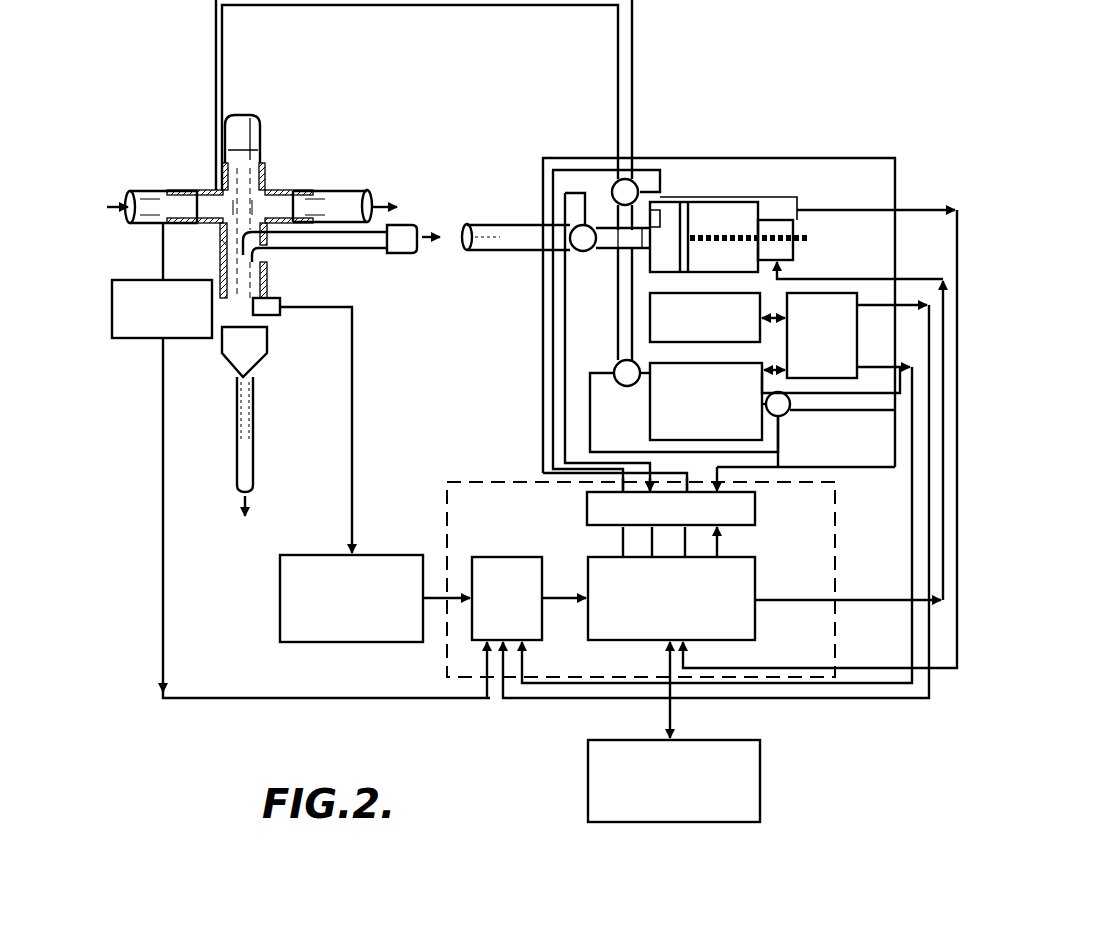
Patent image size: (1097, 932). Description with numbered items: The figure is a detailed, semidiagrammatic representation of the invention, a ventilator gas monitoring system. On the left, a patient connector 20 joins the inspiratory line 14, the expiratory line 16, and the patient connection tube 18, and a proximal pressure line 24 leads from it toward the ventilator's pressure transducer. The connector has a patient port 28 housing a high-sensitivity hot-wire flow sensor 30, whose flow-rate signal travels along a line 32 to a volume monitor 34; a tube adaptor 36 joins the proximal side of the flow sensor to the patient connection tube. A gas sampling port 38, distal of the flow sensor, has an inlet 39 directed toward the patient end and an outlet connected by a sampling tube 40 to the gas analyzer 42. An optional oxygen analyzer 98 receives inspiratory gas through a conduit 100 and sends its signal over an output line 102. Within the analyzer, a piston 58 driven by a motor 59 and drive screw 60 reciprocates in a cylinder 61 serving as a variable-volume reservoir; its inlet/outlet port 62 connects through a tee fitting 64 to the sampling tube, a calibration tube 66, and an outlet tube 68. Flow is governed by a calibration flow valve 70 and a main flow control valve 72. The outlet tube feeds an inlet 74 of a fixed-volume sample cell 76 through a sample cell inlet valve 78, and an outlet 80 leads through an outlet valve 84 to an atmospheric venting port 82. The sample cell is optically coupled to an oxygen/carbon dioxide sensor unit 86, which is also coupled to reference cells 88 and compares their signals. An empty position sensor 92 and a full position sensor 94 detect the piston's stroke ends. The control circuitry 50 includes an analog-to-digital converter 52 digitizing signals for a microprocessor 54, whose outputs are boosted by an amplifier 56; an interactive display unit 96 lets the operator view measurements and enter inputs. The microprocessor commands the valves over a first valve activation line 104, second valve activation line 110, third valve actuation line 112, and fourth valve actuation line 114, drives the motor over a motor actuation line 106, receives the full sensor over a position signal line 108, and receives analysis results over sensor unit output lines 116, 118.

The inspiratory line 14 is at (160, 191).
The expiratory line 16 is at (340, 191).
The patient connection tube 18 is at (254, 467).
The patient connector 20 is at (283, 165).
The proximal pressure line 24 is at (262, 130).
The patient port 28 is at (219, 245).
The flow sensor 30 is at (258, 290).
The line 32 is at (353, 458).
The volume monitor 34 is at (386, 555).
The tube adaptor 36 is at (268, 348).
The gas sampling port 38 is at (240, 209).
The sampling port inlet 39 is at (268, 255).
The sampling tube 40 is at (395, 253).
The gas analyzer 42 is at (733, 147).
The control circuitry 50 is at (472, 482).
The analog-to-digital converter 52 is at (518, 557).
The microprocessor 54 is at (757, 582).
The amplifier 56 is at (757, 512).
The piston 58 is at (723, 234).
The motor 59 is at (796, 260).
The drive screw 60 is at (792, 236).
The cylinder 61 is at (722, 272).
The inlet/outlet port 62 is at (665, 272).
The tee fitting 64 is at (622, 244).
The calibration tube 66 is at (632, 92).
The outlet tube 68 is at (618, 314).
The calibration flow valve 70 is at (612, 183).
The main flow control valve 72 is at (572, 250).
The inlet 74 is at (651, 428).
The sample cell 76 is at (713, 448).
The sample cell inlet valve 78 is at (601, 335).
The outlet 80 is at (720, 440).
The atmospheric venting port 82 is at (862, 410).
The outlet valve 84 is at (780, 417).
The oxygen/carbon dioxide sensor unit 86 is at (845, 378).
The reference cells 88 is at (745, 332).
The empty position sensor 92 is at (669, 237).
The full position sensor 94 is at (740, 210).
The interactive display unit 96 is at (762, 785).
The oxygen analyzer 98 is at (150, 340).
The conduit 100 is at (163, 265).
The output line 102 is at (160, 525).
The first valve activation line 104 is at (662, 180).
The motor actuation line 106 is at (922, 279).
The position signal line 108 is at (790, 197).
The second valve activation line 110 is at (614, 366).
The third valve actuation line 112 is at (768, 468).
The fourth valve actuation line 114 is at (590, 205).
The sensor unit output line 116 is at (880, 304).
The sensor unit output line 118 is at (878, 360).